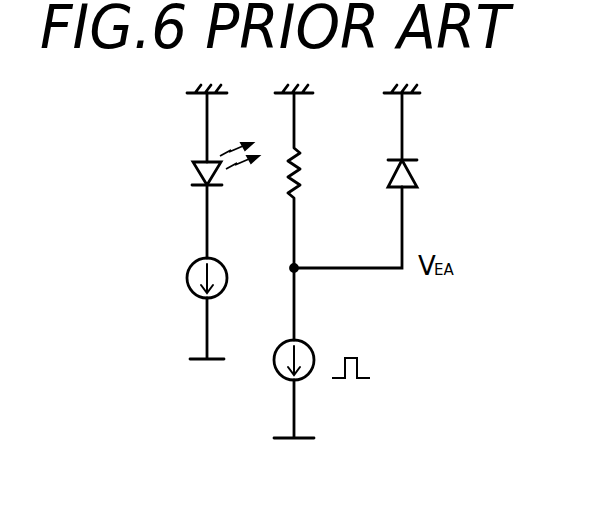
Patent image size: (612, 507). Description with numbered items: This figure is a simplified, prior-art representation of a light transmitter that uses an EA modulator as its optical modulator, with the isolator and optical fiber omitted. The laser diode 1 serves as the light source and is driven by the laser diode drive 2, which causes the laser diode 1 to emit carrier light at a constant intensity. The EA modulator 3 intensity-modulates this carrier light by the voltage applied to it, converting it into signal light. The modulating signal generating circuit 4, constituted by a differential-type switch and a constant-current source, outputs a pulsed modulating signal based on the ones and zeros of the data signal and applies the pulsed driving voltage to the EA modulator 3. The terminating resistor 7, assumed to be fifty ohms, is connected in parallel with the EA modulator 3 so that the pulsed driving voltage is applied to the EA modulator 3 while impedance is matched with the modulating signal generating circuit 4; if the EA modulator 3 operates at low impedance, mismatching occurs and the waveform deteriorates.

The laser diode 1 is at (192, 158).
The laser diode drive 2 is at (187, 278).
The EA modulator 3 is at (418, 177).
The modulating signal generating circuit 4 is at (310, 342).
The terminating resistor 7 is at (308, 153).